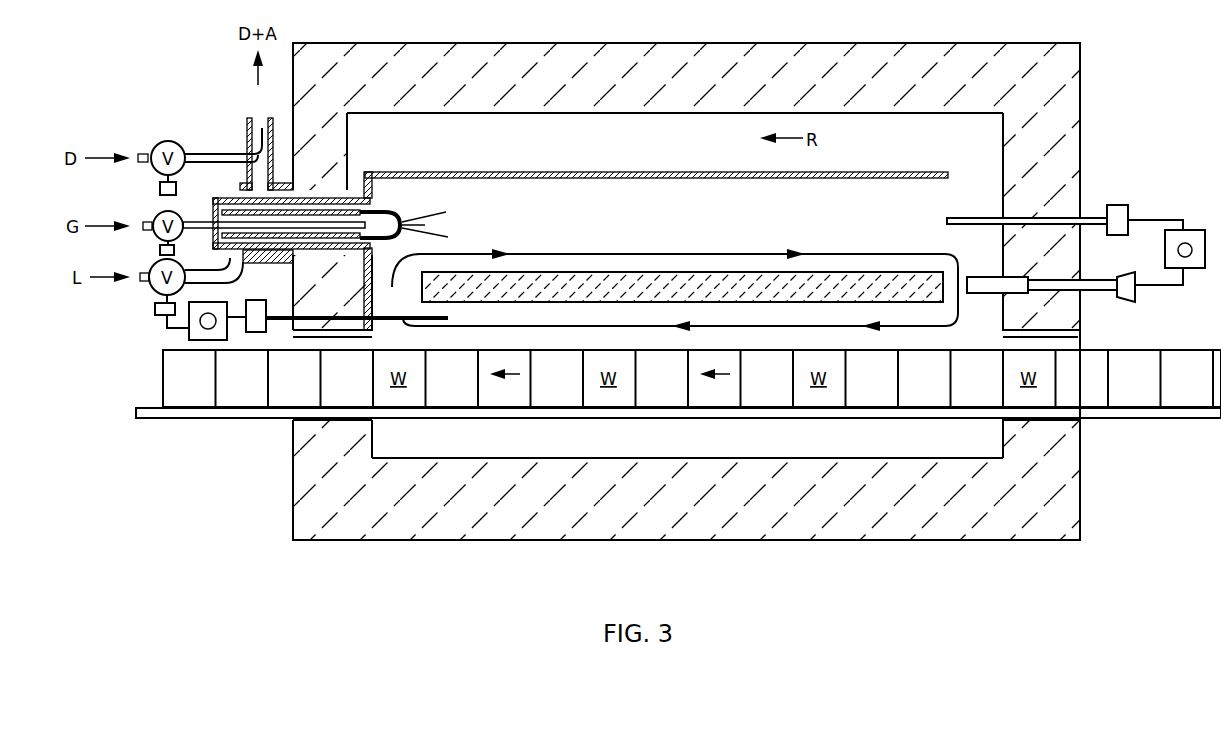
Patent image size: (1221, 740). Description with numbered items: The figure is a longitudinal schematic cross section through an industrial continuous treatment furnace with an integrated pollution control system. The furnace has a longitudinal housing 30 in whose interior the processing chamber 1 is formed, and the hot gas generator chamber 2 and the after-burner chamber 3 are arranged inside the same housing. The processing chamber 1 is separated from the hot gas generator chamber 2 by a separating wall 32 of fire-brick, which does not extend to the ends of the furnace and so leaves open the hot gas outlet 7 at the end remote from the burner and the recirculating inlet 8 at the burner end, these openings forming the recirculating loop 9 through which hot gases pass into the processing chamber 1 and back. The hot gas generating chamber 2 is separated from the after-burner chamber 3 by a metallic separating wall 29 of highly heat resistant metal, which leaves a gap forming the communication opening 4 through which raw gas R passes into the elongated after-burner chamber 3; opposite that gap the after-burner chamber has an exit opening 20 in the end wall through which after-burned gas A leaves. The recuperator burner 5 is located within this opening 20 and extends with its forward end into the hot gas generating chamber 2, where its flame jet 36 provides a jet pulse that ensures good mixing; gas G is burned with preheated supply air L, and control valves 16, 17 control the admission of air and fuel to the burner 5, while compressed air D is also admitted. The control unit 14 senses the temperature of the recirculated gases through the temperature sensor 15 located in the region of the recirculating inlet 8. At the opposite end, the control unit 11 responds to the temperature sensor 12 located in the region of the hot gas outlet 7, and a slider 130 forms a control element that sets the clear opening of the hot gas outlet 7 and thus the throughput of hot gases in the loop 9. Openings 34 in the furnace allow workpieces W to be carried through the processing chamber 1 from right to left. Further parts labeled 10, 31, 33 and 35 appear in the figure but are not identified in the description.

The processing chamber 1 is at (678, 450).
The hot gas generating chamber 2 is at (706, 217).
The after-burner chamber 3 is at (699, 157).
The communication opening 4 is at (960, 170).
The recuperator burner 5 is at (252, 263).
The hot gas outlet 7 is at (980, 302).
The recirculating inlet 8 is at (392, 273).
The loop 9 is at (837, 254).
The transport direction arrow 10 is at (725, 376).
The control unit 11 is at (1192, 270).
The temperature sensor 12 is at (970, 218).
The control unit 14 is at (190, 336).
The temperature sensor 15 is at (465, 320).
The control valve 16 is at (160, 249).
The control valve 17 is at (155, 309).
The exit opening 20 is at (317, 183).
The metallic separating wall 29 is at (505, 172).
The longitudinal housing 30 is at (525, 542).
The furnace floor 31 is at (808, 457).
The separating wall 32 is at (580, 282).
The right wall seal 33 is at (1067, 343).
The openings 34 is at (360, 342).
The conveyor plate 35 is at (243, 413).
The flame jet 36 is at (438, 220).
The slider 130 is at (983, 277).